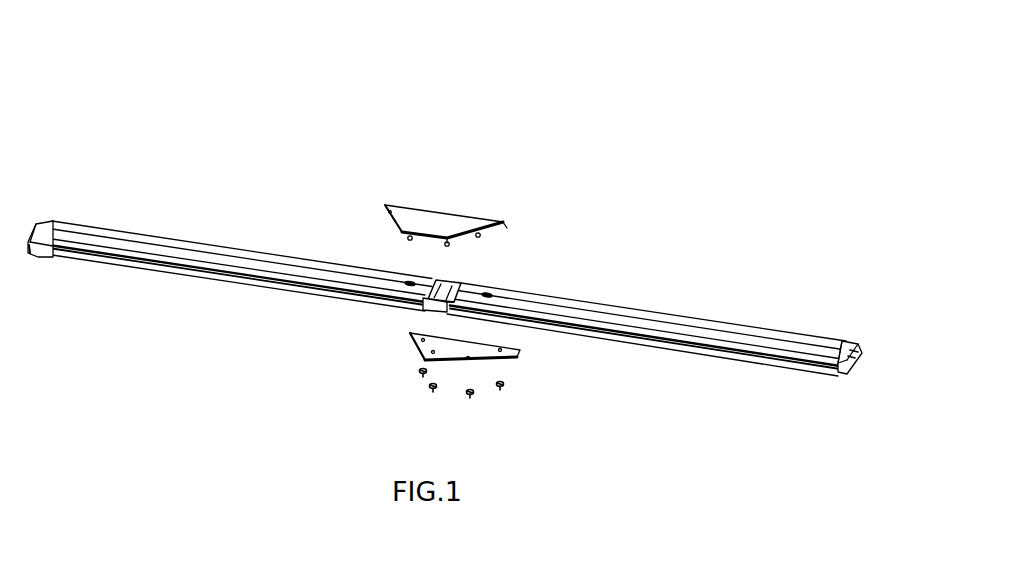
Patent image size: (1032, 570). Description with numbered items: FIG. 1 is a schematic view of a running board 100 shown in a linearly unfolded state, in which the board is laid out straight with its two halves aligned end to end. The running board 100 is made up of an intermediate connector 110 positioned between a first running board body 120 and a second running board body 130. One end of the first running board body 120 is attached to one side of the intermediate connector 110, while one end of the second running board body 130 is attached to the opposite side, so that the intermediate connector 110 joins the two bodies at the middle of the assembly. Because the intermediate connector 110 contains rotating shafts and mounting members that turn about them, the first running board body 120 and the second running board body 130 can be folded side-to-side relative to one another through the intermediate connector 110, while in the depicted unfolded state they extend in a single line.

The running board 100 is at (188, 122).
The intermediate connector 110 is at (420, 307).
The first running board body 120 is at (165, 254).
The second running board body 130 is at (745, 340).